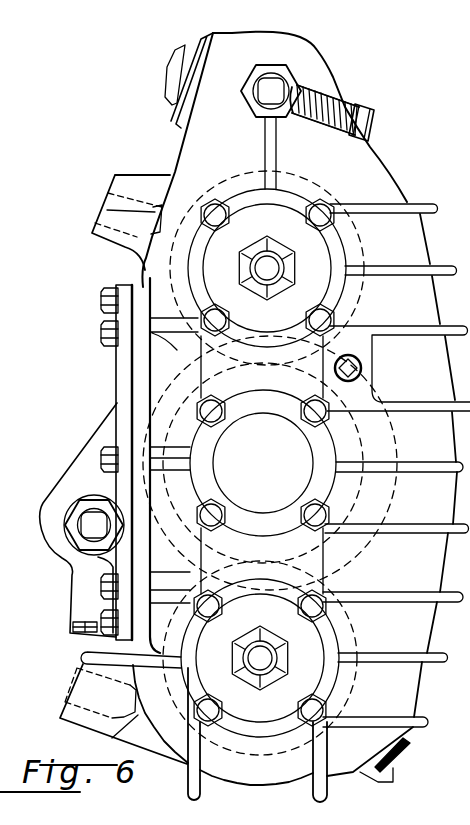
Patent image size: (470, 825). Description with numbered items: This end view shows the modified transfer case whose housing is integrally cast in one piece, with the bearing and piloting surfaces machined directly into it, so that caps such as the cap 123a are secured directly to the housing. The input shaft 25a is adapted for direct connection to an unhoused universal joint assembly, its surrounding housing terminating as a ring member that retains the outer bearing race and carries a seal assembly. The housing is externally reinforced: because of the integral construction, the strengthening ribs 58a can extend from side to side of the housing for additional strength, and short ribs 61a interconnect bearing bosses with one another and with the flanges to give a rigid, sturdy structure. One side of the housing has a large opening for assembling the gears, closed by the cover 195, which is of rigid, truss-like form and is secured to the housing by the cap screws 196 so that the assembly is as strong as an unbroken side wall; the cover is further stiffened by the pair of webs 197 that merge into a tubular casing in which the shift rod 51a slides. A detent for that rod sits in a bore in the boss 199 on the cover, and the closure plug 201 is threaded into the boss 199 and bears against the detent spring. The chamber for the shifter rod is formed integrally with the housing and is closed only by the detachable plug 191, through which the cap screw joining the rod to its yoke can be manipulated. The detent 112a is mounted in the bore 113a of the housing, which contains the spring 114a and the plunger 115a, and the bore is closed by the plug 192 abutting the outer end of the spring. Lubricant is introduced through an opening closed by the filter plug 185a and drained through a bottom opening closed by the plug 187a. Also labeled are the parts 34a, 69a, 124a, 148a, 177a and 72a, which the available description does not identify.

The input shaft 25a is at (283, 235).
The bearing flange bolts 69a is at (307, 318).
The cap 123a is at (293, 470).
The intermediate flange bolts 124a is at (311, 512).
The short ribs 61a is at (320, 554).
The lower shaft hub nut 34a is at (280, 625).
The lower flange bolts 177a is at (303, 708).
The strengthening ribs 58a is at (314, 794).
The filter plug 185a is at (364, 371).
The plug 187a is at (395, 770).
The detent 112a is at (293, 95).
The spring 114a is at (318, 89).
The plunger 115a is at (333, 100).
The bore 113a is at (362, 101).
The plug 192 is at (372, 130).
The detachable plug 191 is at (176, 112).
The cover 195 is at (116, 386).
The cap screws 196 is at (101, 333).
The webs 197 is at (97, 583).
The boss 199 is at (96, 618).
The closure plug 201 is at (77, 631).
The pivot nut 148a is at (85, 527).
The shift rod 51a is at (80, 552).
The lower bracket 72a is at (45, 676).